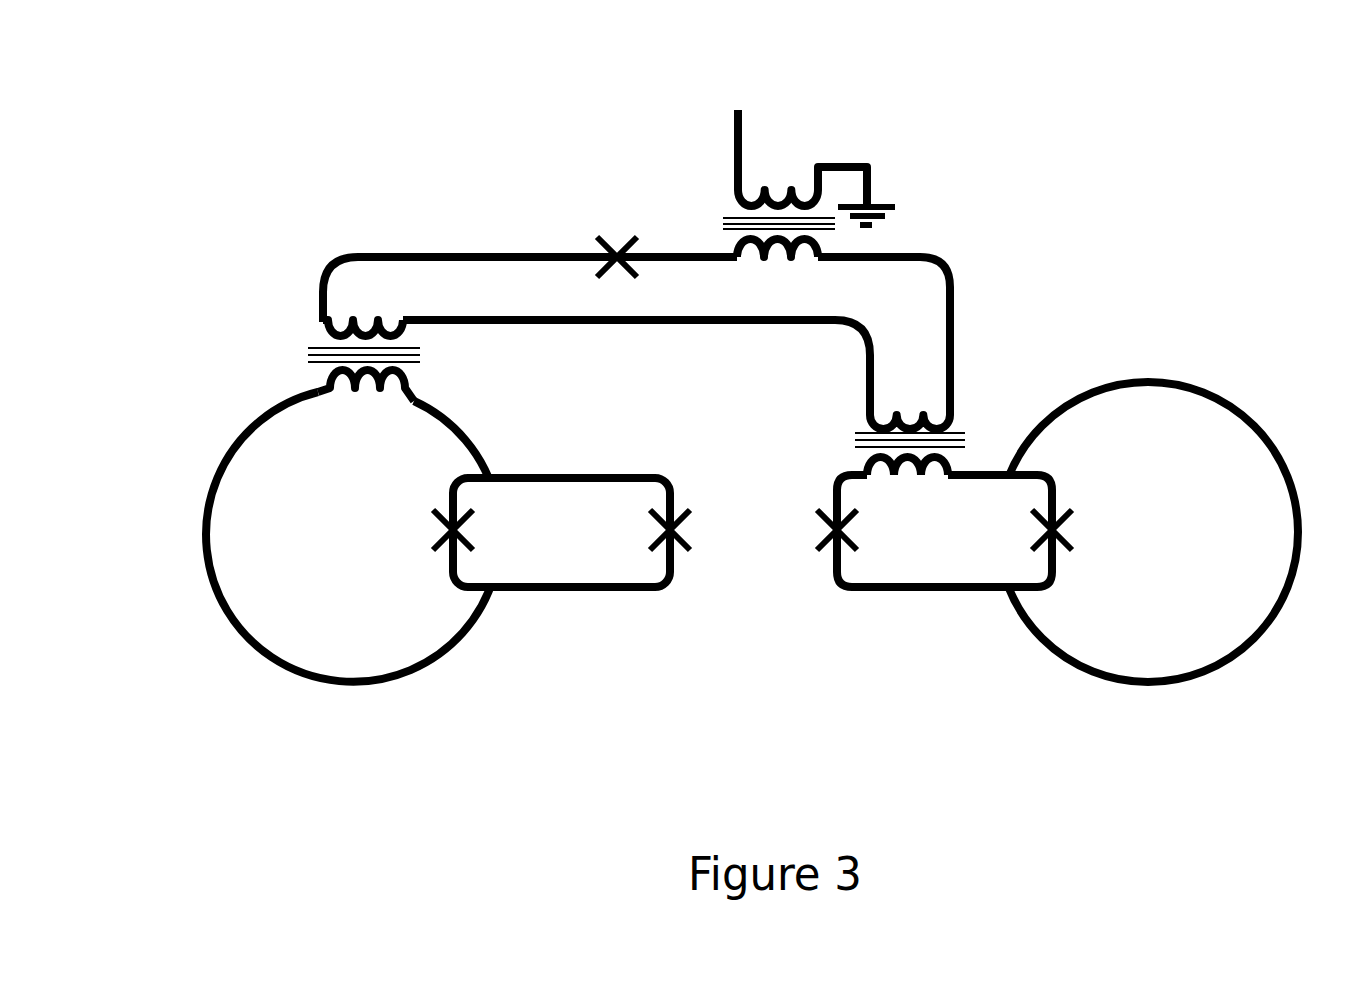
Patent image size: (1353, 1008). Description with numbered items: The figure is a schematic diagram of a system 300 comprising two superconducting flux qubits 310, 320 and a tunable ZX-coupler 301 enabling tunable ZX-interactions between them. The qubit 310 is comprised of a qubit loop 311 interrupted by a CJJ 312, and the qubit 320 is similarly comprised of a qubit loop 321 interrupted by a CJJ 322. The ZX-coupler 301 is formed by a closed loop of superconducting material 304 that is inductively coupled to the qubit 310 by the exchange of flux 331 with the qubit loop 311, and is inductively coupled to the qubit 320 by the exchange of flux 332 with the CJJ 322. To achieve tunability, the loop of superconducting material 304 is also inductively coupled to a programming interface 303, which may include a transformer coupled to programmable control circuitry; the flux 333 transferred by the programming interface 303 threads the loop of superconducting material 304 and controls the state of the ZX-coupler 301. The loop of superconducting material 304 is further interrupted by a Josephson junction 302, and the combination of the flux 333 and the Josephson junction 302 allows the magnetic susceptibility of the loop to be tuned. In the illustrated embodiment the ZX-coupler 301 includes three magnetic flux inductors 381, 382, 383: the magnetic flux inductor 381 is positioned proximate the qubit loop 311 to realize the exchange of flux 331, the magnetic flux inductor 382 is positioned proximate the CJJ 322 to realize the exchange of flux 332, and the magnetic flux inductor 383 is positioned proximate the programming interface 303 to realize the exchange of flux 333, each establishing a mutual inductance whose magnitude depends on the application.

The system 300 is at (252, 141).
The tunable ZX-coupler 301 is at (502, 280).
The Josephson junction 302 is at (617, 250).
The programming interface 303 is at (797, 182).
The closed loop of superconducting material 304 is at (953, 300).
The qubit 310 is at (672, 685).
The qubit loop 311 is at (262, 458).
The CJJ 312 is at (548, 560).
The qubit 320 is at (1288, 685).
The qubit loop 321 is at (1225, 455).
The CJJ 322 is at (955, 562).
The exchange of flux 331 is at (420, 355).
The exchange of flux 332 is at (857, 445).
The flux 333 is at (727, 218).
The magnetic flux inductor 381 is at (365, 320).
The magnetic flux inductor 382 is at (932, 413).
The magnetic flux inductor 383 is at (810, 250).